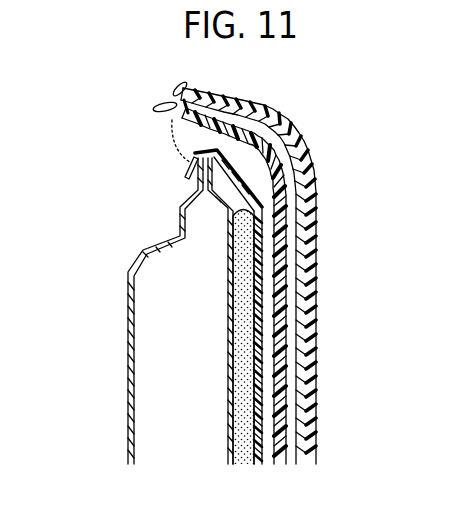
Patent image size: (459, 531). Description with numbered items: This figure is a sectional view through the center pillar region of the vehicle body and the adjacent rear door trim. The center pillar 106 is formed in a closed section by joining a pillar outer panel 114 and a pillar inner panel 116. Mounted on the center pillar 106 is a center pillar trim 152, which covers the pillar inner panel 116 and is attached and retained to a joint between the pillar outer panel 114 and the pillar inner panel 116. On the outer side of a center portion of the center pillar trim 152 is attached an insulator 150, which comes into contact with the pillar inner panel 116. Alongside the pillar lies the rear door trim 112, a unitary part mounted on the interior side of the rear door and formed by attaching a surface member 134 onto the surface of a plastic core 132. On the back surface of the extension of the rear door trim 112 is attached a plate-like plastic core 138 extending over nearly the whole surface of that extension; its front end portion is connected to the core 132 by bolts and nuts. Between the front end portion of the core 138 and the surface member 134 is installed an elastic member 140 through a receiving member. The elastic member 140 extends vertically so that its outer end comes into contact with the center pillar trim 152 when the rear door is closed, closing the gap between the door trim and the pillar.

The center pillar 106 is at (125, 311).
The pillar outer panel 114 is at (127, 415).
The pillar inner panel 116 is at (228, 431).
The rear door trim 112 is at (299, 131).
The plastic core 132 is at (302, 183).
The surface member 134 is at (316, 267).
The plate-like plastic core 138 is at (253, 142).
The elastic member 140 is at (172, 143).
The insulator 150 is at (238, 325).
The center pillar trim 152 is at (260, 377).